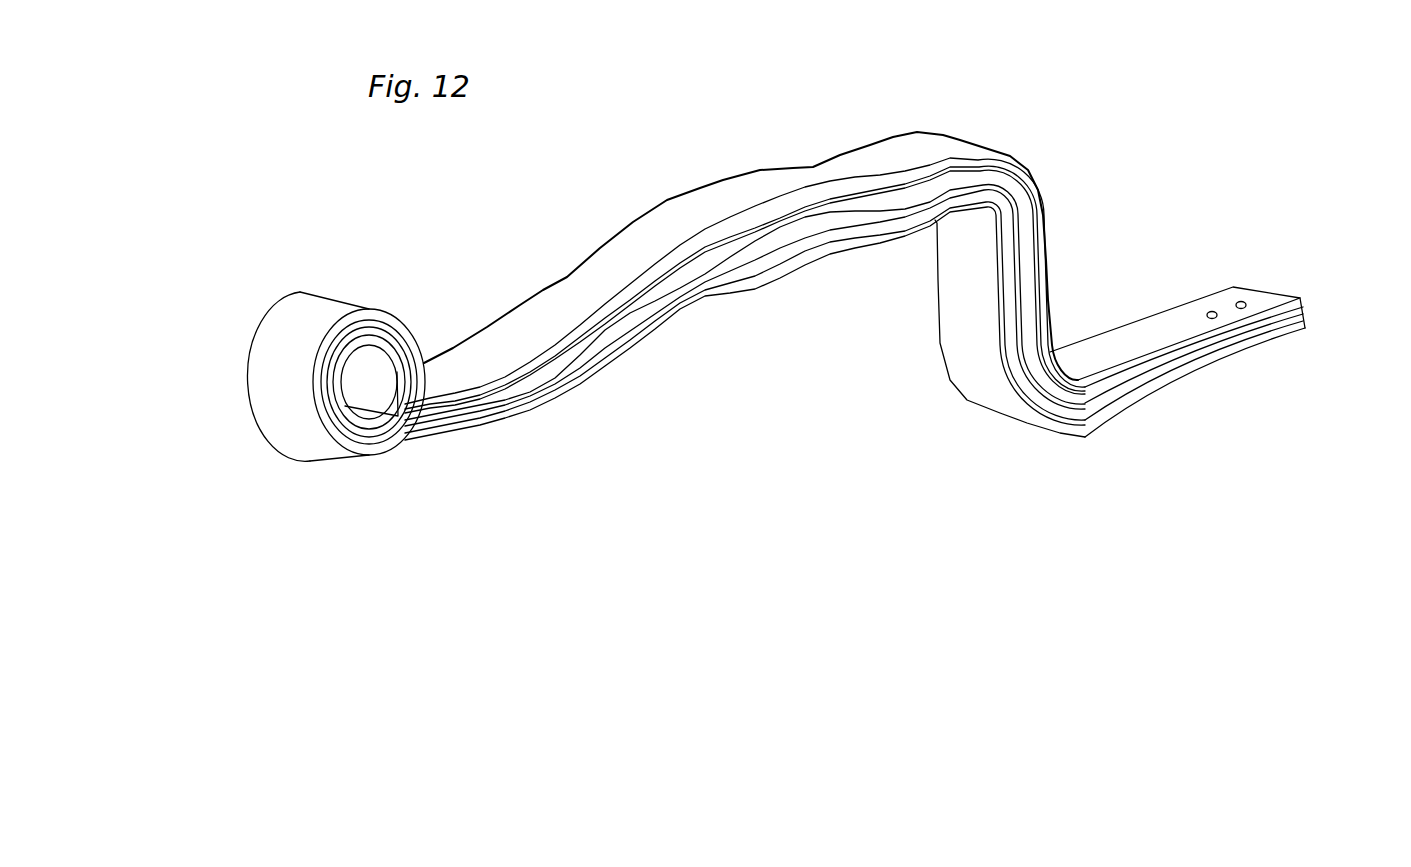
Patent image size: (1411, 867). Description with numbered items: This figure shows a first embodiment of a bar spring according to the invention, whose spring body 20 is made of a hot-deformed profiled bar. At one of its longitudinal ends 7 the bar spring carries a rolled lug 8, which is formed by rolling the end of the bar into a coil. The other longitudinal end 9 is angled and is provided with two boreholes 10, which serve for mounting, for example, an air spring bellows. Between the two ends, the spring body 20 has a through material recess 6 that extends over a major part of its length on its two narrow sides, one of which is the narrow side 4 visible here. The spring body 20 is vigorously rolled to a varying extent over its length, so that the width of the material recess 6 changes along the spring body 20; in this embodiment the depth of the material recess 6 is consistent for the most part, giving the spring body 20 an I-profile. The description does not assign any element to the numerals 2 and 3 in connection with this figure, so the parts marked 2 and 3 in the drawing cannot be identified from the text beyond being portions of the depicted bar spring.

The spring body 20 is at (686, 165).
The upper cover layer 2 is at (880, 157).
The vertical web section 3 is at (988, 405).
The narrow side 4 is at (629, 346).
The material recess 6 is at (790, 240).
The longitudinal end 7 is at (229, 309).
The rolled lug 8 is at (303, 445).
The other longitudinal end 9 is at (1328, 292).
The boreholes 10 is at (1242, 302).